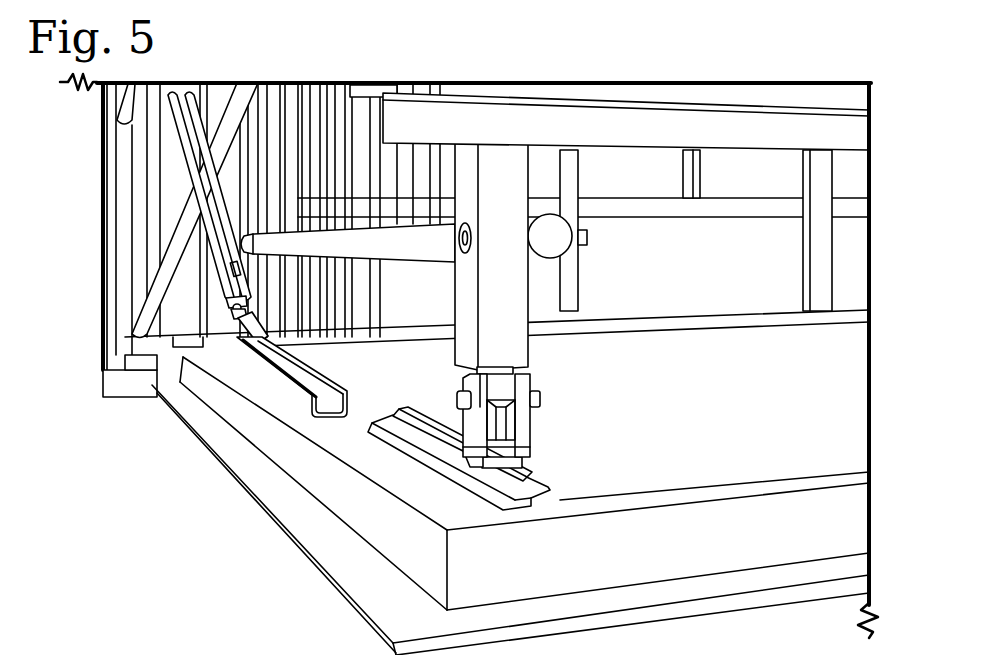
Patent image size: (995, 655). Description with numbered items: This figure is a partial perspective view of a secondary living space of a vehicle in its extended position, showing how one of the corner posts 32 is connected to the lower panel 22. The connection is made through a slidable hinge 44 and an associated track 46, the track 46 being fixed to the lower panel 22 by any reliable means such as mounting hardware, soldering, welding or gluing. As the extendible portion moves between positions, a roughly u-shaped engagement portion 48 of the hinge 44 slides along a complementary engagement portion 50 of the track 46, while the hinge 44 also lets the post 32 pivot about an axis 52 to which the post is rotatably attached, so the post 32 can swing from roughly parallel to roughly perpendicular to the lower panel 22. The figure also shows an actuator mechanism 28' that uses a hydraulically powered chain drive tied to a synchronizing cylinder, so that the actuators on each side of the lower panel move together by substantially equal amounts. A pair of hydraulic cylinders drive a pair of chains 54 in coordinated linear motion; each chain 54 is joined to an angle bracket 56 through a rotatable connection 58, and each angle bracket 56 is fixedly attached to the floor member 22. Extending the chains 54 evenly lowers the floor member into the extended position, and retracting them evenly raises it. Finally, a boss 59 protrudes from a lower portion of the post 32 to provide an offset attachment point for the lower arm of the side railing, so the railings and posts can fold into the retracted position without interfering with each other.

The lower panel 22 is at (273, 497).
The actuator mechanism 28' is at (92, 240).
The post 32 is at (455, 297).
The slidable hinge 44 is at (541, 417).
The track 46 is at (428, 475).
The engagement portion 48 is at (523, 462).
The engagement portion 50 is at (412, 415).
The axis 52 is at (557, 457).
The chain 54 is at (215, 275).
The angle bracket 56 is at (312, 370).
The rotatable connection 58 is at (250, 327).
The boss 59 is at (545, 256).